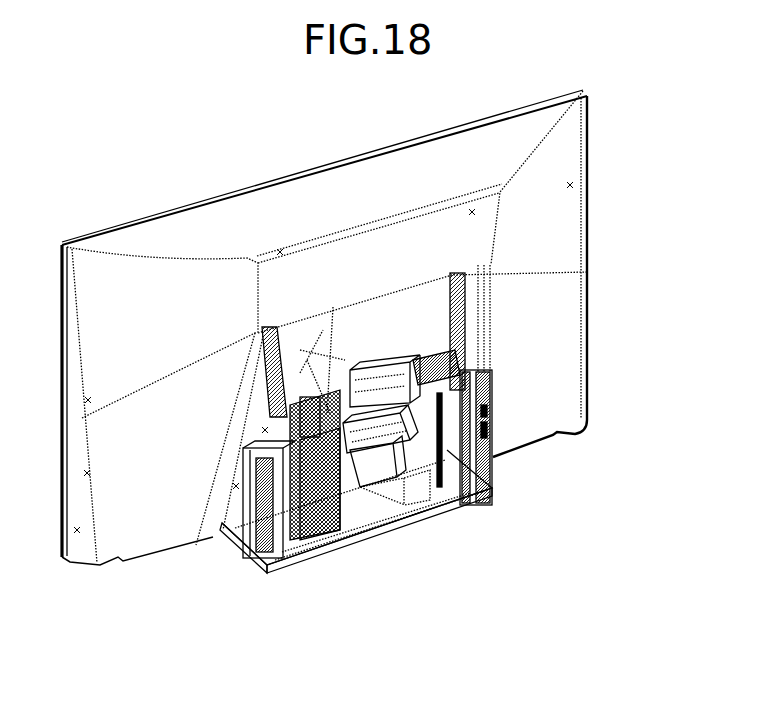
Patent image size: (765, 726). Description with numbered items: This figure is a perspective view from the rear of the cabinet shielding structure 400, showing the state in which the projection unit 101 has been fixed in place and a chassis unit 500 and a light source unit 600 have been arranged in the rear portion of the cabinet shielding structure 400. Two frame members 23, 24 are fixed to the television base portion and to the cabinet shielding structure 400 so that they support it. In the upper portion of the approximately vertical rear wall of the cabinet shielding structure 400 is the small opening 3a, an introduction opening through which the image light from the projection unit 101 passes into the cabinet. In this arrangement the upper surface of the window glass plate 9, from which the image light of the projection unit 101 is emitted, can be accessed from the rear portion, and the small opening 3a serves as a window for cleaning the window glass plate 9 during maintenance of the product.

The cabinet shielding structure 400 is at (367, 202).
The opening (light introducing and managing opening) 3a is at (362, 372).
The window glass plate 9 is at (348, 382).
The frame member 23 is at (480, 426).
The light source unit 600 is at (455, 490).
The projection unit 101 is at (405, 490).
The chassis unit 500 is at (317, 512).
The frame member 24 is at (283, 496).